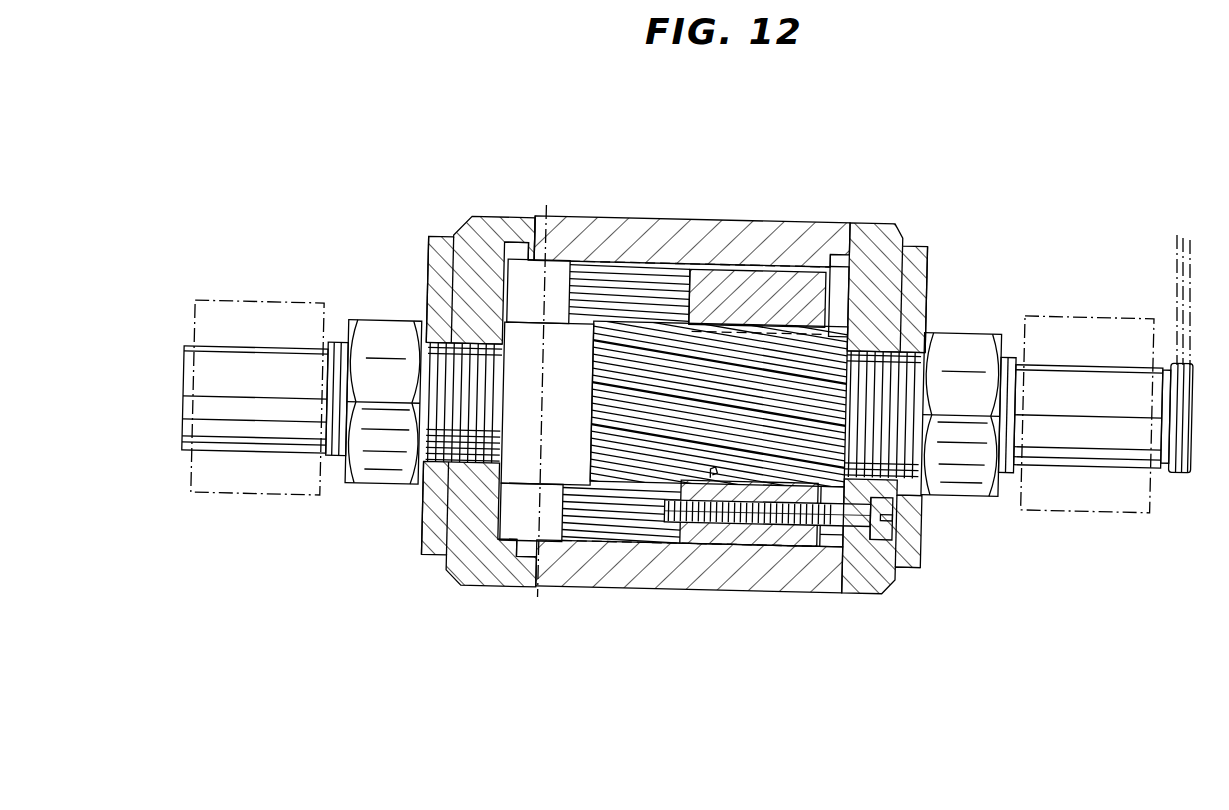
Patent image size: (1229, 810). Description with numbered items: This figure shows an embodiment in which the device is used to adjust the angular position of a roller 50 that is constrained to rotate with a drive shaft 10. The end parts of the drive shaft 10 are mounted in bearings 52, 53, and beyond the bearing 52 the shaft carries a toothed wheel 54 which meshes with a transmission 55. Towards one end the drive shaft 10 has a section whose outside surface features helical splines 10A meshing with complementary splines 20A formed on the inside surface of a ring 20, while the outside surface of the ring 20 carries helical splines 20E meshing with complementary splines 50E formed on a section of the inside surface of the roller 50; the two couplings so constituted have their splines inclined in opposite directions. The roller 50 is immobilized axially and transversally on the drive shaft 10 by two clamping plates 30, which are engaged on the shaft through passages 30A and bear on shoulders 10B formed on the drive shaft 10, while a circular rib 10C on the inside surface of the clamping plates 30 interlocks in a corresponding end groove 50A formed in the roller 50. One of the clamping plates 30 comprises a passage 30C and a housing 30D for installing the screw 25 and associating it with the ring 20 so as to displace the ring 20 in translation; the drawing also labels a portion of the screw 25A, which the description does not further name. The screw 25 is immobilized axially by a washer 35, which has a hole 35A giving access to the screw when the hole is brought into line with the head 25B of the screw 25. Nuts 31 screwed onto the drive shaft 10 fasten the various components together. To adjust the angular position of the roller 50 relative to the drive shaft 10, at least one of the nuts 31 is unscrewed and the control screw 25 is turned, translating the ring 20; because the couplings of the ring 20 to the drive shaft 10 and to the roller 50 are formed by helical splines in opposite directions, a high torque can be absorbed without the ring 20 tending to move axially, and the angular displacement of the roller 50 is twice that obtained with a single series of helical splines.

The drive shaft 10 is at (572, 403).
The helical splines 10A is at (775, 408).
The shoulders 10B is at (507, 308).
The circular rib 10C is at (523, 258).
The ring 20 is at (752, 287).
The complementary splines 20A is at (697, 583).
The helical splines 20E is at (723, 265).
The screw 25 is at (757, 525).
The screw threaded portion 25A is at (803, 528).
The head 25B is at (895, 528).
The clamping plates 30 is at (425, 553).
The passages 30A is at (462, 335).
The passage 30C is at (855, 533).
The housing 30D is at (898, 568).
The nuts 31 is at (372, 473).
The washer 35 is at (920, 252).
The hole 35A is at (913, 510).
The roller 50 is at (618, 232).
The end groove 50A is at (831, 258).
The complementary splines 50E is at (657, 280).
The bearing 52 is at (1072, 325).
The bearing 53 is at (265, 303).
The toothed wheel 54 is at (1187, 364).
The transmission 55 is at (1178, 245).